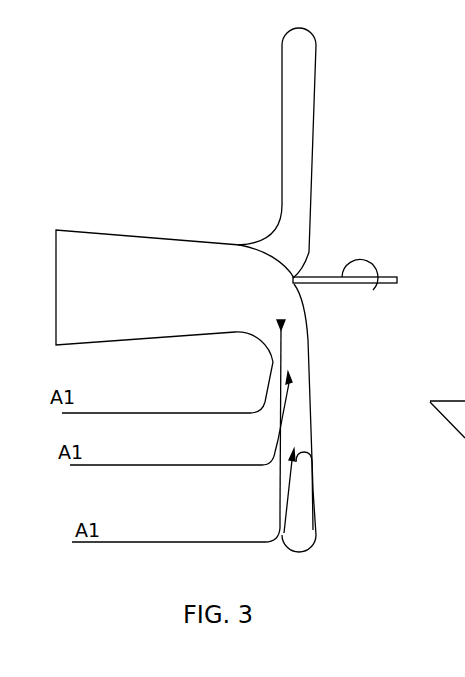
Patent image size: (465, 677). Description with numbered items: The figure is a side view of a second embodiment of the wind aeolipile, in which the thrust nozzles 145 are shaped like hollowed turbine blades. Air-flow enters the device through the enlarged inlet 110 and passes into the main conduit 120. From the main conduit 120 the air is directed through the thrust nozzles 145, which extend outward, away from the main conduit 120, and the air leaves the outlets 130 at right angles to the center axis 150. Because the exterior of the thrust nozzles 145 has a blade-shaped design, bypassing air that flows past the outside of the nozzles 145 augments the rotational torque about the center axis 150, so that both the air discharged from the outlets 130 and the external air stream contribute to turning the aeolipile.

The enlarged inlet 110 is at (55, 268).
The main conduit 120 is at (117, 322).
The nozzle outlet 130 is at (298, 530).
The thrust nozzle 145 is at (292, 412).
The center axis 150 is at (394, 277).